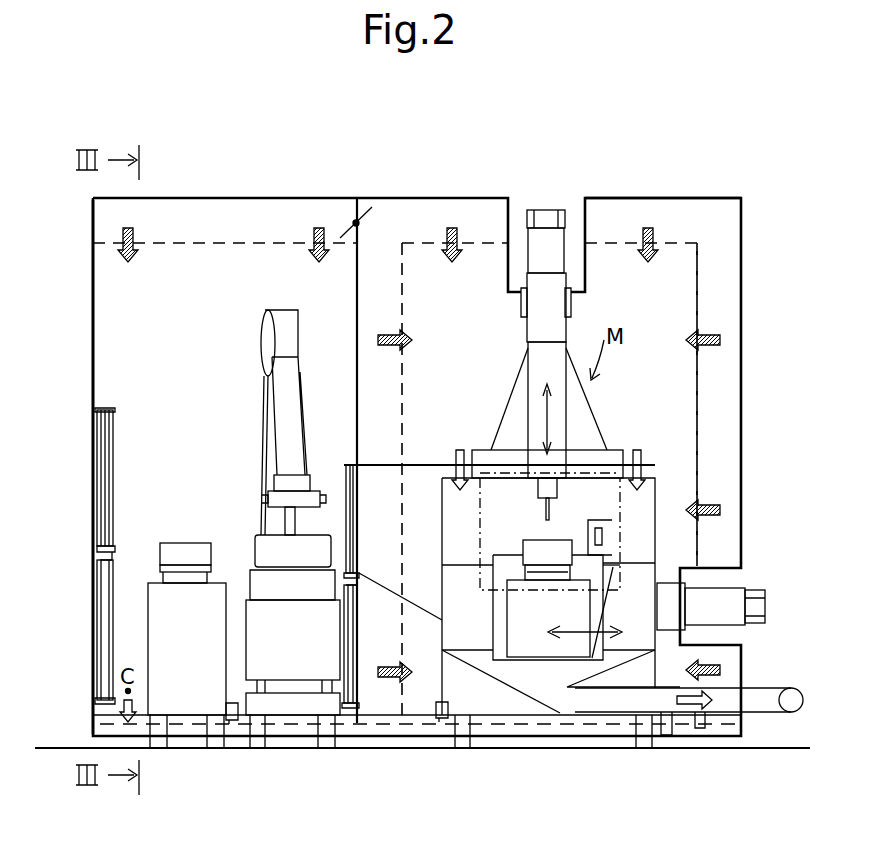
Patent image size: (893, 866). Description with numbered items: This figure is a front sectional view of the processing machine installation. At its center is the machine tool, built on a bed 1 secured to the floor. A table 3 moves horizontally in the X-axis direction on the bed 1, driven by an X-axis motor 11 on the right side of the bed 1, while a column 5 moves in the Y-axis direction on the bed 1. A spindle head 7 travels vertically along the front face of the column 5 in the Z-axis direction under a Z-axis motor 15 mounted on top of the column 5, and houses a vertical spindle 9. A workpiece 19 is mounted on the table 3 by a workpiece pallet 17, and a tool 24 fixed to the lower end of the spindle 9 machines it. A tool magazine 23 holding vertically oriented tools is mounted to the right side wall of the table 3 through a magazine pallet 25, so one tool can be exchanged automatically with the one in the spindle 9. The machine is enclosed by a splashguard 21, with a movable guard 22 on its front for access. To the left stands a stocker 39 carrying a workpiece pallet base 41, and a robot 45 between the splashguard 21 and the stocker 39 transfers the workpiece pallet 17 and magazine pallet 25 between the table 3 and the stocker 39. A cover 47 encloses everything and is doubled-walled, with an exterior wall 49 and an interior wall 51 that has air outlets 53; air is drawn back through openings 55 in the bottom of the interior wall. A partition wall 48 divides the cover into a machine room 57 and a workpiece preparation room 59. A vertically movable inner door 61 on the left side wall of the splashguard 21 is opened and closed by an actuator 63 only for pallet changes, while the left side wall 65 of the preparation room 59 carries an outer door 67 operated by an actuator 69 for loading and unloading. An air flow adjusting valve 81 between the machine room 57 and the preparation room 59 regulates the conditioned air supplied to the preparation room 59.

The bed 1 is at (480, 693).
The table 3 is at (522, 623).
The column 5 is at (583, 420).
The spindle head 7 is at (535, 407).
The spindle 9 is at (540, 490).
The X-axis motor 11 is at (757, 602).
The Z-axis motor 15 is at (547, 208).
The workpiece pallet 17 is at (163, 568).
The workpiece 19 is at (187, 551).
The splashguard 21 is at (434, 463).
The movable guard 22 is at (480, 555).
The tool magazine 23 is at (610, 548).
The tool 24 is at (551, 516).
The magazine pallet 25 is at (612, 568).
The stocker 39 is at (196, 669).
The workpiece pallet base 41 is at (183, 577).
The robot 45 is at (256, 421).
The cover 47 is at (440, 196).
The partition wall 48 is at (357, 325).
The exterior wall 49 is at (652, 197).
The interior wall 51 is at (237, 243).
The air outlet 53 is at (697, 291).
The opening 55 is at (236, 726).
The machine room 57 is at (475, 312).
The workpiece preparation room 59 is at (190, 315).
The inner door 61 is at (357, 520).
The actuator 63 is at (355, 652).
The left side wall 65 is at (93, 296).
The outer door 67 is at (97, 480).
The actuator 69 is at (100, 628).
The air flow adjusting valve 81 is at (355, 220).